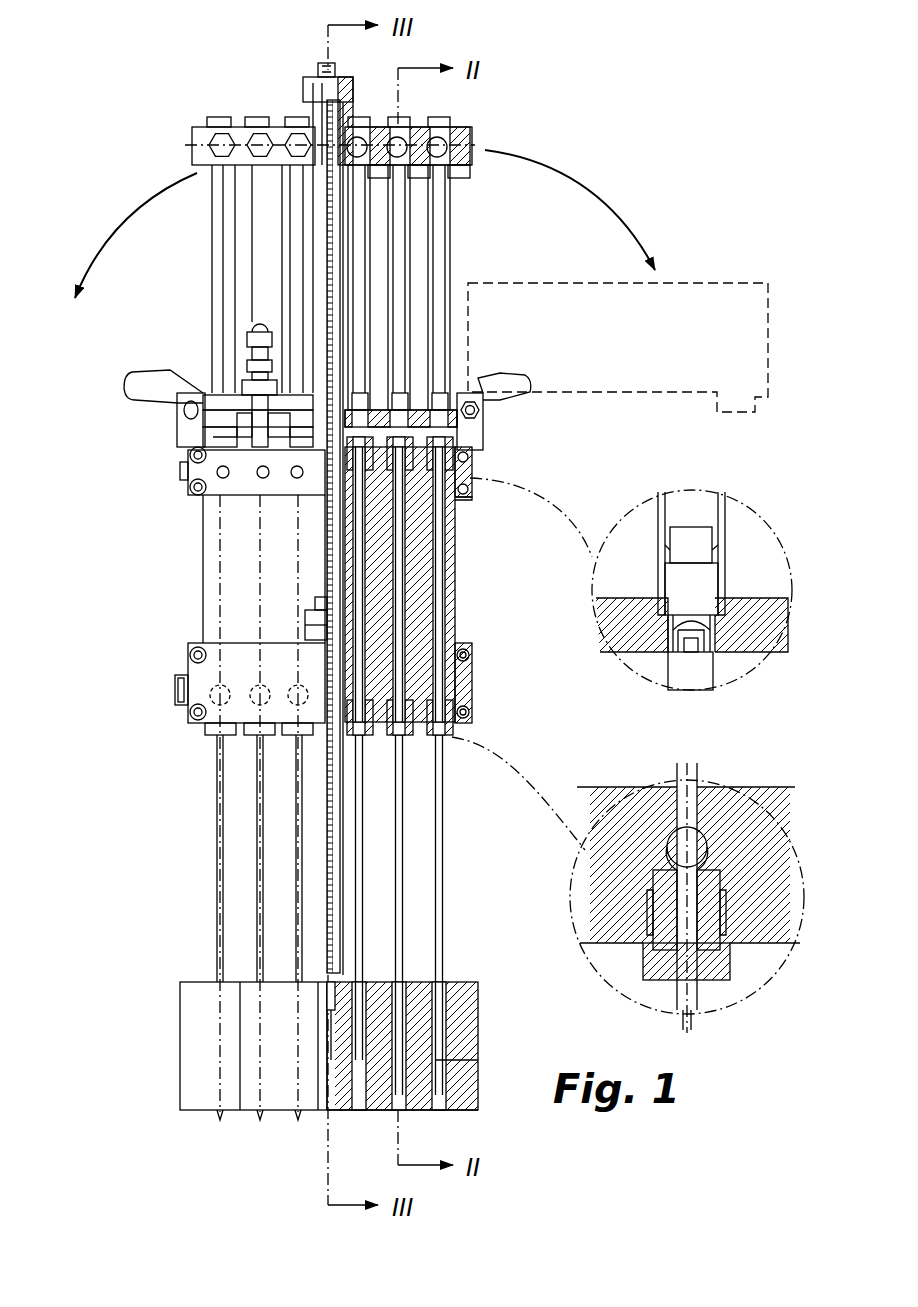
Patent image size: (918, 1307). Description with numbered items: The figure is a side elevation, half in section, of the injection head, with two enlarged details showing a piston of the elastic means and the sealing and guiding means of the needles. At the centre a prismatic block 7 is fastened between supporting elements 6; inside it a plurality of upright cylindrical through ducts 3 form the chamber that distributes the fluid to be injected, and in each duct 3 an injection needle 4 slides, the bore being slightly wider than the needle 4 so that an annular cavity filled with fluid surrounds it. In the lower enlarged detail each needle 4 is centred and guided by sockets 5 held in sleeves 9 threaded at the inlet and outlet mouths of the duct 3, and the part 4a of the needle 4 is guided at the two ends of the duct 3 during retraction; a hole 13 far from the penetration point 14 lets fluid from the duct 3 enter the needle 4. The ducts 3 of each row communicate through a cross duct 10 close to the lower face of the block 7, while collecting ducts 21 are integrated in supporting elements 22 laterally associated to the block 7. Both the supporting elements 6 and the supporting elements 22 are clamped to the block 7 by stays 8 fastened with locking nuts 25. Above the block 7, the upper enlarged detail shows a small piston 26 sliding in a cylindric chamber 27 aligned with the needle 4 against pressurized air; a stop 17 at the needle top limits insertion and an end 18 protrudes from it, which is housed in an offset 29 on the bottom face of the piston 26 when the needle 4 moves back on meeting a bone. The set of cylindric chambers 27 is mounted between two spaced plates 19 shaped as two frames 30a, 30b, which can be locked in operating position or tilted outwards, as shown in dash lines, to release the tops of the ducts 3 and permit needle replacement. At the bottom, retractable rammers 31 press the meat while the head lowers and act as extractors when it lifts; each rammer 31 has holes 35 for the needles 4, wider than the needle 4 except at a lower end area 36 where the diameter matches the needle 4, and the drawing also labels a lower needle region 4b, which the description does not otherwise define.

The upright cylindric through duct 3 is at (450, 566).
The injection needle 4 is at (442, 835).
The needle part 4a is at (445, 632).
The lower guide block 4b is at (440, 1014).
The socket 5 is at (660, 928).
The supporting element 6 is at (242, 655).
The prismatic block 7 is at (425, 600).
The stay 8 is at (192, 448).
The sleeve 9 is at (457, 440).
The cross duct 10 is at (472, 705).
The hole 13 is at (684, 860).
The penetration point 14 is at (440, 1114).
The stop 17 is at (678, 688).
The end 18 is at (700, 670).
The plate 19 is at (462, 137).
The collecting duct 21 is at (475, 497).
The supporting element 22 is at (245, 487).
The locking nut 25 is at (190, 490).
The piston 26 is at (441, 403).
The cylindric chamber 27 is at (440, 190).
The offset 29 is at (728, 660).
The frame 30a is at (465, 252).
The frame 30b is at (200, 122).
The retractable rammer 31 is at (188, 1044).
The hole 35 is at (448, 1035).
The lower end area 36 is at (447, 1100).